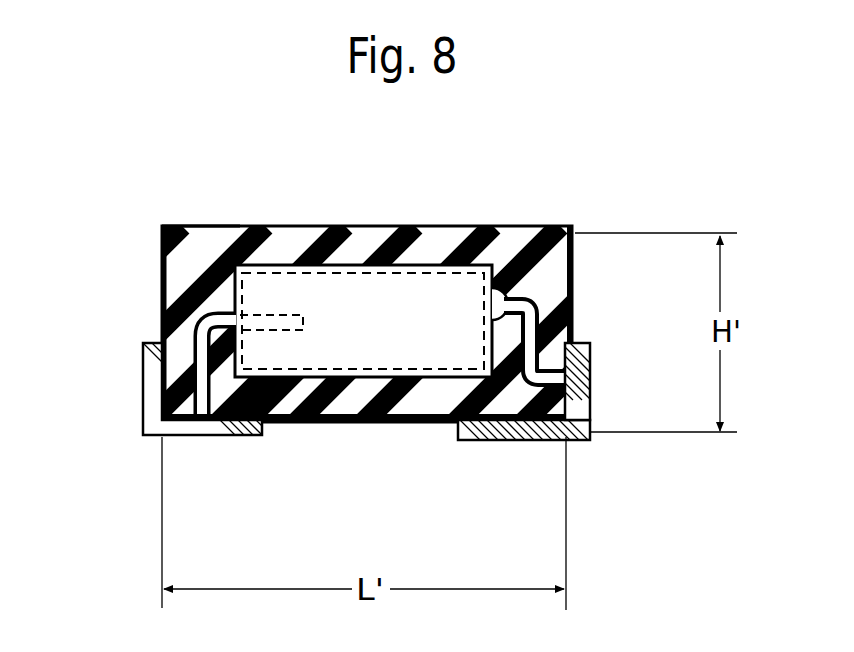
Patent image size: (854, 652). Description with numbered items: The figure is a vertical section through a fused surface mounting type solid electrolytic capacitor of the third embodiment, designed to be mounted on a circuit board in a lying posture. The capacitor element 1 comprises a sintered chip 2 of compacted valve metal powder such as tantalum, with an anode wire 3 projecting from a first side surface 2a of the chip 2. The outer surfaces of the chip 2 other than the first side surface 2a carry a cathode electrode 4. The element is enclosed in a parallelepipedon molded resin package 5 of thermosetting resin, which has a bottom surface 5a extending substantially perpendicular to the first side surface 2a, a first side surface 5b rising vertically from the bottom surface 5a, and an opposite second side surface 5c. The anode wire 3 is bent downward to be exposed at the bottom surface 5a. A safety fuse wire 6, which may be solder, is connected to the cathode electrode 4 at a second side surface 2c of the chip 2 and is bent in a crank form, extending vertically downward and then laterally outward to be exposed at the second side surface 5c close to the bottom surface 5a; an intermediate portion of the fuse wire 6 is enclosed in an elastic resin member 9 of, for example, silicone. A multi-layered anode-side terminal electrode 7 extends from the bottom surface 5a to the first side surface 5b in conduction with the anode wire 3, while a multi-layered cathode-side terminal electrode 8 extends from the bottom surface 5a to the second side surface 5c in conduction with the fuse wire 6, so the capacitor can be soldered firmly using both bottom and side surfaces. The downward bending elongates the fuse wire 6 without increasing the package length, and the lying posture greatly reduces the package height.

The capacitor element 1 is at (348, 266).
The sintered chip 2 is at (301, 300).
The first side surface of the chip 2a is at (177, 226).
The second side surface of the chip 2c is at (497, 288).
The anode wire 3 is at (200, 310).
The cathode electrode 4 is at (245, 226).
The molded resin package 5 is at (568, 230).
The bottom surface of the package 5a is at (365, 424).
The first side surface of the package 5b is at (162, 278).
The second side surface of the package 5c is at (575, 277).
The safety fuse wire 6 is at (588, 367).
The anode-side terminal electrode 7 is at (222, 437).
The cathode-side terminal electrode 8 is at (523, 438).
The elastic resin member 9 is at (576, 330).